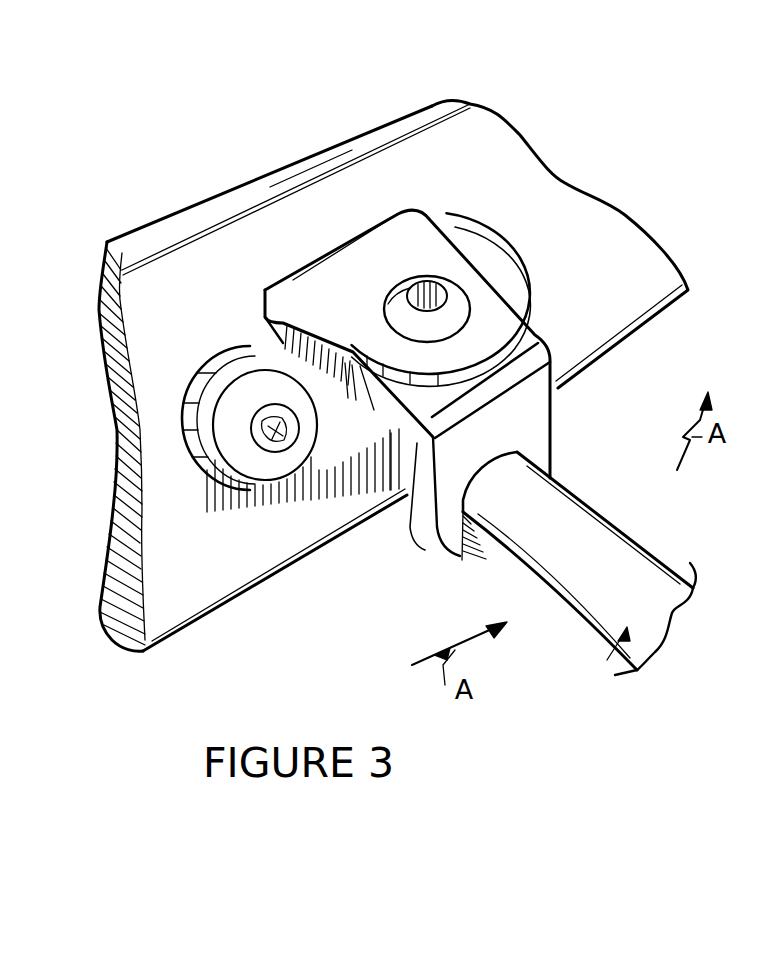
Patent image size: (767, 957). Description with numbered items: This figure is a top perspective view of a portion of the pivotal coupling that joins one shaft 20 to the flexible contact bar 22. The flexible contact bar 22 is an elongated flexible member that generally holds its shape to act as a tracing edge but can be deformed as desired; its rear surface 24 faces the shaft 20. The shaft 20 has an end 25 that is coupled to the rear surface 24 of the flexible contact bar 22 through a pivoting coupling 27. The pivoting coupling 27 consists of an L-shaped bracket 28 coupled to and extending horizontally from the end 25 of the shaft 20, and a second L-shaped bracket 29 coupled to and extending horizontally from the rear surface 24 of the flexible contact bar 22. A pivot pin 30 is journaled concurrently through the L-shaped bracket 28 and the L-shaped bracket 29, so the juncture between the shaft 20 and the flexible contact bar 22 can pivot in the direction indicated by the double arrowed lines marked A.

The shaft 20 is at (614, 656).
The flexible contact bar 22 is at (312, 155).
The rear surface 24 is at (515, 160).
The end 25 is at (492, 510).
The pivoting coupling 27 is at (366, 547).
The L-shaped bracket 28 is at (505, 372).
The L-shaped bracket 29 is at (552, 406).
The pivot pin 30 is at (462, 305).